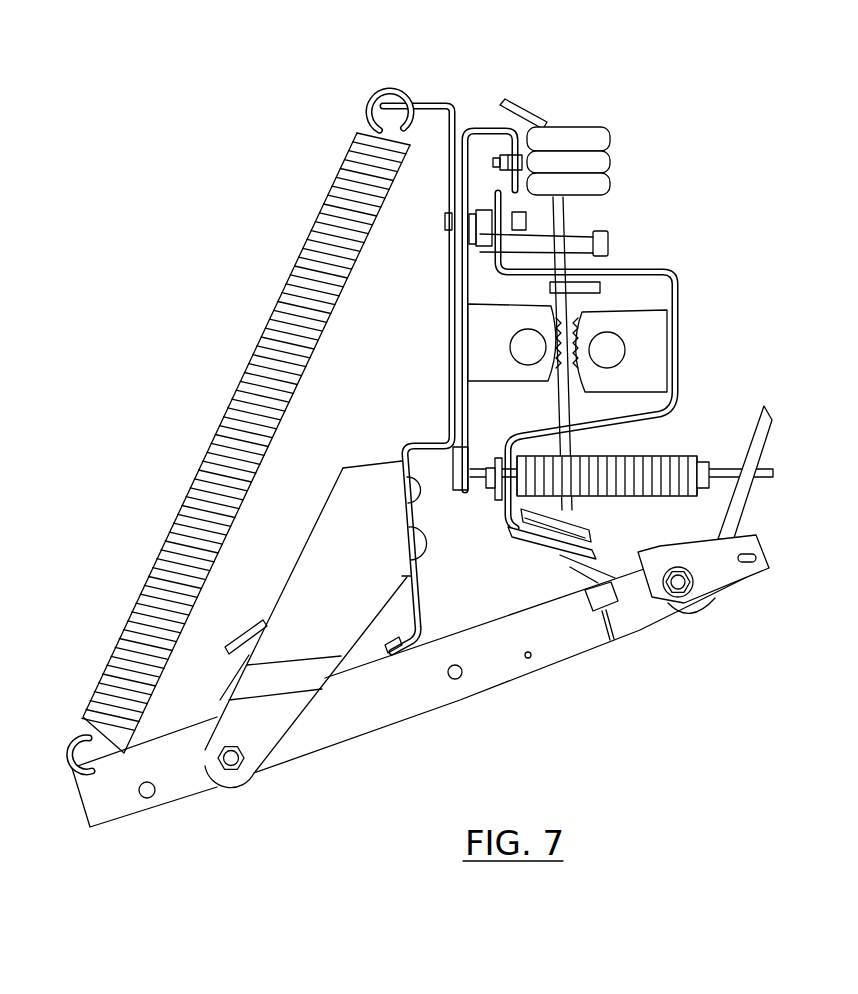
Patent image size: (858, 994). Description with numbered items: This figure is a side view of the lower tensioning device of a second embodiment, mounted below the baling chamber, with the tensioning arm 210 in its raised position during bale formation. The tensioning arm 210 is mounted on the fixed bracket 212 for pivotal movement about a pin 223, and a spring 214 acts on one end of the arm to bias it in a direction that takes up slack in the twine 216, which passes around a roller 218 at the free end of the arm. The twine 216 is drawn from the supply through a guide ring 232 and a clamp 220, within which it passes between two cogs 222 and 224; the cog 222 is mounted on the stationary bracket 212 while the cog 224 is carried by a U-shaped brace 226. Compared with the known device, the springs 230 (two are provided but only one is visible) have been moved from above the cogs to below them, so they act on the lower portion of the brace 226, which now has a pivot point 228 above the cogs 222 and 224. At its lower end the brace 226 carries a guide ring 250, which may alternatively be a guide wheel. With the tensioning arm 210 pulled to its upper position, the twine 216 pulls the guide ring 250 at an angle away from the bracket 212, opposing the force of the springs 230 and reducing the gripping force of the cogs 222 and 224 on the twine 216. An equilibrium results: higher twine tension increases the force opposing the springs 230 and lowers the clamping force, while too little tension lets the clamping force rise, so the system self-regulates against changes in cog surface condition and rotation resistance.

The tensioning arm 210 is at (550, 670).
The bracket 212 is at (308, 580).
The spring 214 is at (273, 297).
The twine 216 is at (738, 498).
The roller 218 is at (700, 612).
The clamp 220 is at (712, 312).
The cog 222 is at (527, 302).
The pin 223 is at (240, 766).
The cog 224 is at (603, 315).
The brace 226 is at (678, 362).
The pivot point 228 is at (527, 221).
The springs 230 is at (670, 452).
The guide ring 232 is at (590, 141).
The guide ring 250 is at (528, 542).